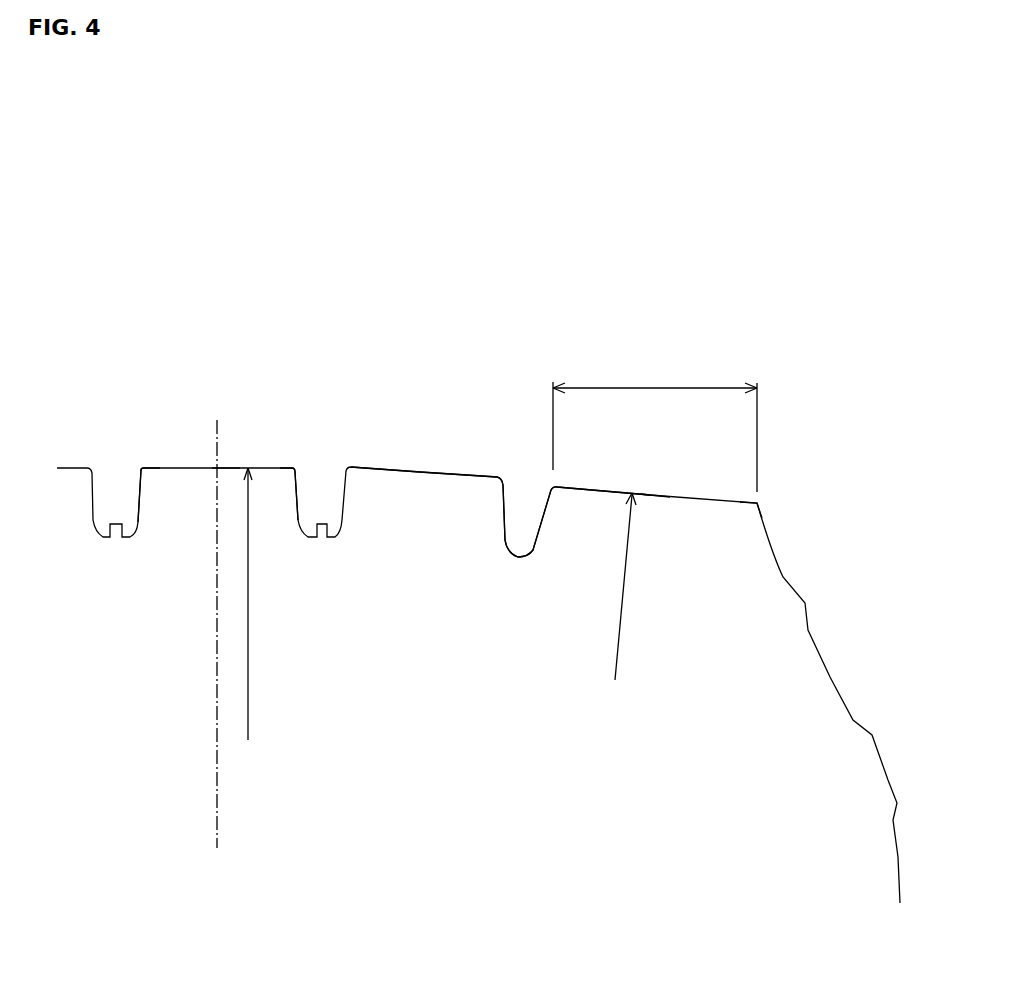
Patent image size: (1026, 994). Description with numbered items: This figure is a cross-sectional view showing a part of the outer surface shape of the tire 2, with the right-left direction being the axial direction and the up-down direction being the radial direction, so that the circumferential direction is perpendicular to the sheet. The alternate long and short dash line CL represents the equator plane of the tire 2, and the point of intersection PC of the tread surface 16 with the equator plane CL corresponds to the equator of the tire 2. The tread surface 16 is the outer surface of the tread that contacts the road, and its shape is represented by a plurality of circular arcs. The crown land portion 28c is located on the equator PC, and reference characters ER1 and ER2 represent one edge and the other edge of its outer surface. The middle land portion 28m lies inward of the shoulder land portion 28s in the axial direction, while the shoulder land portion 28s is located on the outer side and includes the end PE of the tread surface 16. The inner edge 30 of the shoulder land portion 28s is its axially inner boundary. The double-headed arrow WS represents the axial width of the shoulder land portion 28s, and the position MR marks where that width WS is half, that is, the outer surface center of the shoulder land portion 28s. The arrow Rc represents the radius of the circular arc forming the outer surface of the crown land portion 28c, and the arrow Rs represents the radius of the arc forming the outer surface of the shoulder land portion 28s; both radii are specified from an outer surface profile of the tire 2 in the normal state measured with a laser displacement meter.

The tire 2 is at (806, 402).
The tread surface 16 is at (380, 466).
The crown land portion 28c is at (231, 467).
The middle land portion 28m is at (450, 472).
The shoulder land portion 28s is at (601, 488).
The inner edge of shoulder land portion 30 is at (552, 485).
The one edge of the outer surface of the crown land portion ER1 is at (141, 466).
The other edge of the outer surface of the crown land portion ER2 is at (295, 466).
The point of intersection PC is at (215, 466).
The end of the tread surface PE is at (761, 501).
The outer surface center of the shoulder land portion MR is at (655, 493).
The width of the shoulder land portion WS is at (655, 428).
The radius of crown land portion arc Rc is at (262, 604).
The radius of shoulder land portion arc Rs is at (630, 586).
The equator plane CL is at (217, 822).